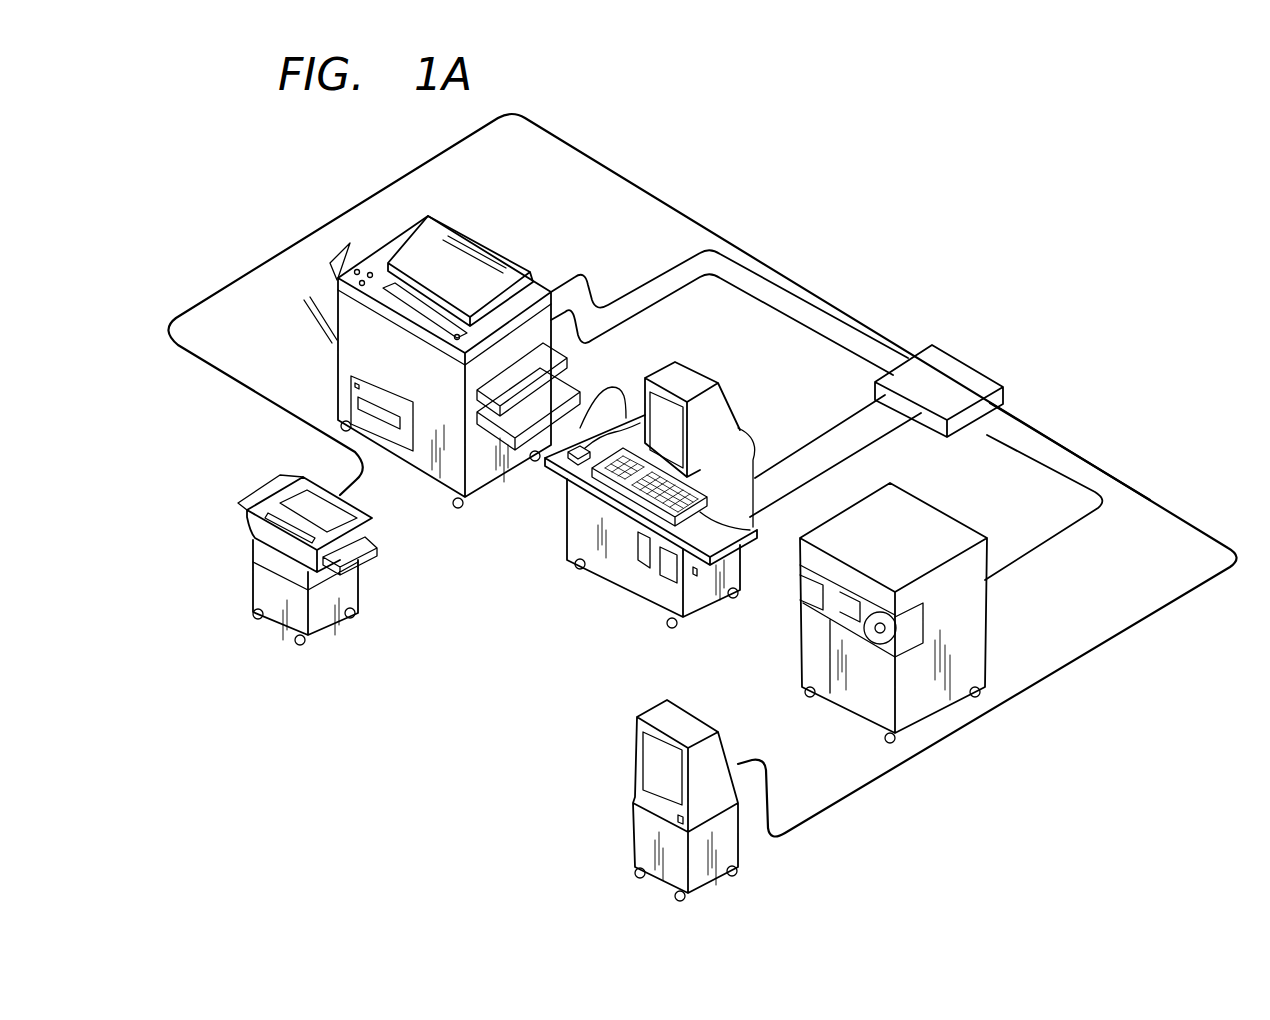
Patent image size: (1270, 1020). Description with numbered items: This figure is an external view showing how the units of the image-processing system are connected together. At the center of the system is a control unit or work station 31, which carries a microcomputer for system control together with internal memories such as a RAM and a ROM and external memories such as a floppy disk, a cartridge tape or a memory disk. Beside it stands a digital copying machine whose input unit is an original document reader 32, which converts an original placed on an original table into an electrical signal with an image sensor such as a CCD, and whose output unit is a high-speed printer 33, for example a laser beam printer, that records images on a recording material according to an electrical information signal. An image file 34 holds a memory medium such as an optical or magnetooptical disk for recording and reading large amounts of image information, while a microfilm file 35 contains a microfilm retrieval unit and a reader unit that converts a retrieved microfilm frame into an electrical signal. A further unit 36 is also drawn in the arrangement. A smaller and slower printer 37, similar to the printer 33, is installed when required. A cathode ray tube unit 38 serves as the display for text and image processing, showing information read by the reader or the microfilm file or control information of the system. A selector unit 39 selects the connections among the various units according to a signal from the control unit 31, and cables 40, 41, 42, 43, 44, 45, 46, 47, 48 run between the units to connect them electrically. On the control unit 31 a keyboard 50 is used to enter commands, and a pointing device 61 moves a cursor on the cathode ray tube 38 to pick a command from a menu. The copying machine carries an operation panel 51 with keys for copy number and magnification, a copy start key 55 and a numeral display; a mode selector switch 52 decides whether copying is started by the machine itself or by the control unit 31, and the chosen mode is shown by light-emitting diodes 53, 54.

The control unit or work station 31 is at (570, 505).
The original document reader 32 is at (430, 218).
The high-speed printer 33 is at (445, 412).
The image file 34 is at (380, 432).
The microfilm file 35 is at (945, 525).
The terminal 36 is at (690, 718).
The printer 37 is at (265, 600).
The cathode ray tube unit 38 is at (670, 405).
The selector unit 39 is at (960, 370).
The cable 40 is at (672, 205).
The cable 41 is at (652, 275).
The cable 42 is at (697, 278).
The cable 43 is at (837, 430).
The cable 44 is at (852, 458).
The cable 45 is at (988, 436).
The cable 46 is at (1020, 412).
The cable 47 is at (607, 385).
The cable 48 is at (750, 430).
The keyboard 50 is at (750, 530).
The operation panel 51 is at (420, 315).
The mode selector switch 52 is at (355, 268).
The light-emitting diode 53 is at (370, 270).
The light-emitting diode 54 is at (360, 281).
The copy start key 55 is at (458, 342).
The pointing device 61 is at (560, 470).